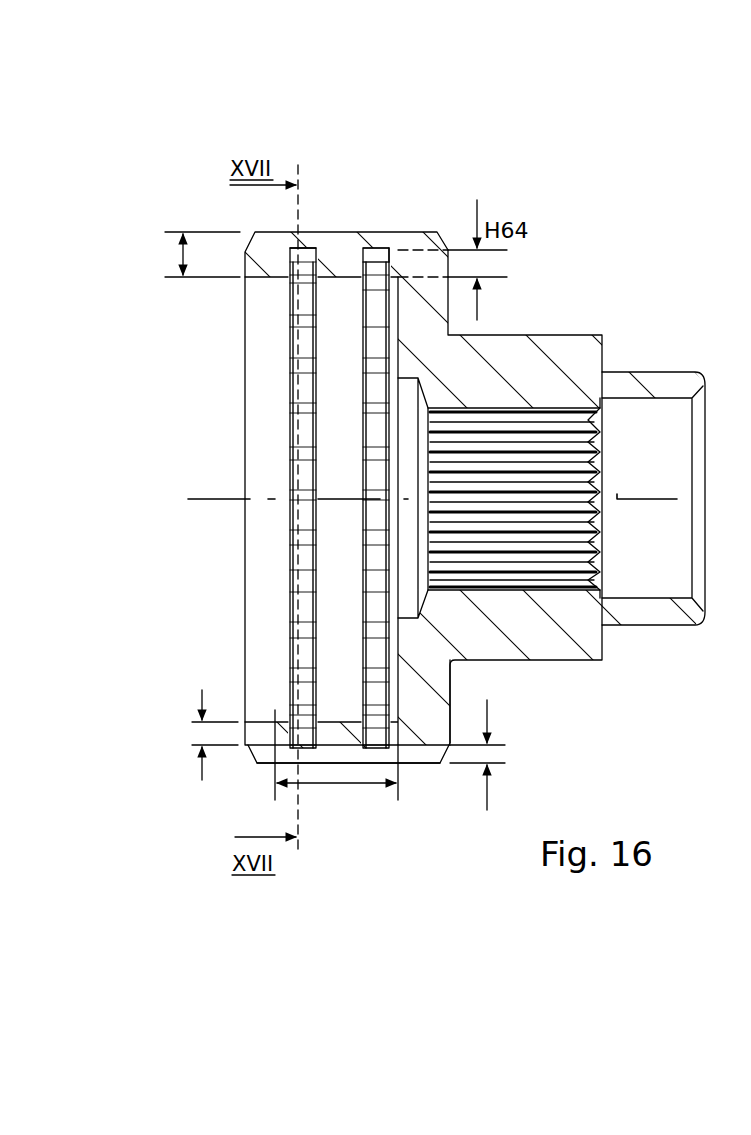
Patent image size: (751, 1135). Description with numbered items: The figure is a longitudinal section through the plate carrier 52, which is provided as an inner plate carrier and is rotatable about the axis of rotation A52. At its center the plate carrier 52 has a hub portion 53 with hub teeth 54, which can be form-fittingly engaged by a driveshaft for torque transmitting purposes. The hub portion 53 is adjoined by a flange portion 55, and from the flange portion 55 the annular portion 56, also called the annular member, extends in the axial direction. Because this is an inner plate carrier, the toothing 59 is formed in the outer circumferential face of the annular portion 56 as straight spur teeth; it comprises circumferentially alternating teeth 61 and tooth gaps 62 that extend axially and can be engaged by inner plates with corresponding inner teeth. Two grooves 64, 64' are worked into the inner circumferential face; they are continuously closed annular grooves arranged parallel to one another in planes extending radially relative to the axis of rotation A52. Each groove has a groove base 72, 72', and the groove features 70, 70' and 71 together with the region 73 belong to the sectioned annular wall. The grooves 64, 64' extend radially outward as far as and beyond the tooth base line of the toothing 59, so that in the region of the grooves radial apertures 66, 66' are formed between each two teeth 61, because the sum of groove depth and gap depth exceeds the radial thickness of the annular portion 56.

The plate carrier 52 is at (568, 205).
The axis of rotation A52 is at (657, 499).
The hub portion 53 is at (545, 360).
The hub teeth 54 is at (572, 430).
The flange portion 55 is at (440, 690).
The annular portion 56 is at (334, 230).
The toothing 59 is at (408, 755).
The teeth 61 is at (413, 233).
The tooth gaps 62 is at (420, 760).
The groove 64 is at (251, 498).
The groove 64' is at (290, 498).
The radial aperture 66 is at (265, 555).
The radial aperture 66' is at (297, 555).
The groove flank 70 is at (397, 218).
The groove flank 70' is at (371, 218).
The groove flank 71 is at (305, 256).
The groove base 72 is at (242, 505).
The second carrier ring 72' is at (282, 505).
The lower flange portion 73 is at (260, 728).